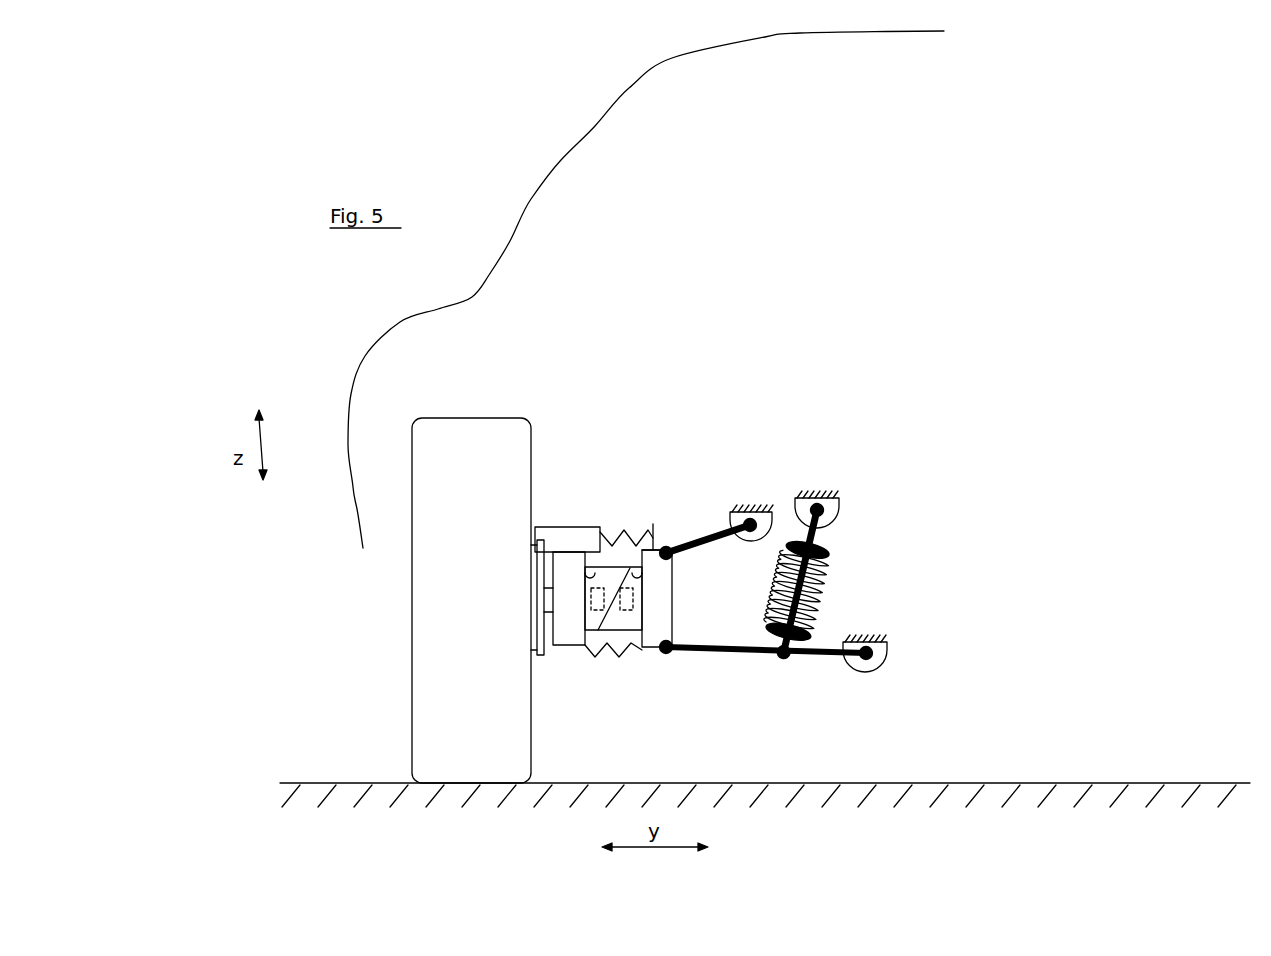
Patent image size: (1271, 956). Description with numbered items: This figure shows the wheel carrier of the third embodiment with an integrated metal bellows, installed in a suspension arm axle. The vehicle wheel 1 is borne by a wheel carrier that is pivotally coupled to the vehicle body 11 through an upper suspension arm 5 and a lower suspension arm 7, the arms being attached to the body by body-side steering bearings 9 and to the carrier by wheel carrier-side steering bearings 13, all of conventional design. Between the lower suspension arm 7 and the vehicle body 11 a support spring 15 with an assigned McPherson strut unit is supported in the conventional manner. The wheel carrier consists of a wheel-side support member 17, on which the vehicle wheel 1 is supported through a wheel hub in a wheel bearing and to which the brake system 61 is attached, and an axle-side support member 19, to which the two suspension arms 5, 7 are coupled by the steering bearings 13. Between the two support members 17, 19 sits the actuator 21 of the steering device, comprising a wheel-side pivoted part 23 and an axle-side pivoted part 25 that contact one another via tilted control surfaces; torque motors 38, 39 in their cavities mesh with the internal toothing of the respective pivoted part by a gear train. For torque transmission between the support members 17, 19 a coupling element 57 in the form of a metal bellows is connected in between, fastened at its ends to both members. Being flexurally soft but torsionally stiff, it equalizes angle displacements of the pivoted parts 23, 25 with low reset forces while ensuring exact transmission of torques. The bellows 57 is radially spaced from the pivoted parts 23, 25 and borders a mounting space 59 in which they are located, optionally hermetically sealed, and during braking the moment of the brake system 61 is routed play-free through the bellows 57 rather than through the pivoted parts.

The vehicle wheel 1 is at (488, 417).
The upper suspension arm 5 is at (693, 540).
The lower suspension arm 7 is at (810, 657).
The body-side steering bearing 9 is at (750, 532).
The vehicle body 11 is at (737, 511).
The wheel carrier-side steering bearing 13 is at (668, 547).
The support spring 15 is at (822, 573).
The wheel-side support member 17 is at (568, 635).
The axle-side support member 19 is at (663, 597).
The actuator 21 is at (628, 552).
The wheel-side pivoted part 23 is at (593, 580).
The axle-side pivoted part 25 is at (648, 549).
The torque motor 38 is at (595, 612).
The torque motor 39 is at (618, 630).
The coupling element 57 is at (604, 526).
The mounting space 59 is at (603, 645).
The brake system 61 is at (563, 526).